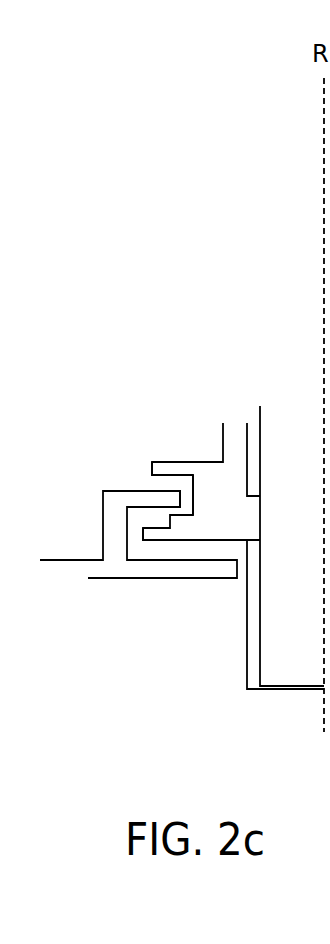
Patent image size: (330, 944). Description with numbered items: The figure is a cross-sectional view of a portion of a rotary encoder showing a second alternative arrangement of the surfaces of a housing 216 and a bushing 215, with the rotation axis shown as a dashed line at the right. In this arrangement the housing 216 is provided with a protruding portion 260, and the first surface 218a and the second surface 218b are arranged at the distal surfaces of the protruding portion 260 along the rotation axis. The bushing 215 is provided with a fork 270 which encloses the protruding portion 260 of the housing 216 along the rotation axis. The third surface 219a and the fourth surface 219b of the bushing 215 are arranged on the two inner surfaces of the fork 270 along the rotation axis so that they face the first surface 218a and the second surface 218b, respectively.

The bushing 215 is at (230, 483).
The housing 216 is at (103, 583).
The protruding portion 260 is at (144, 496).
The fork 270 is at (157, 530).
The first surface 218a is at (165, 480).
The second surface 218b is at (172, 516).
The third surface 219a is at (177, 479).
The fourth surface 219b is at (190, 518).